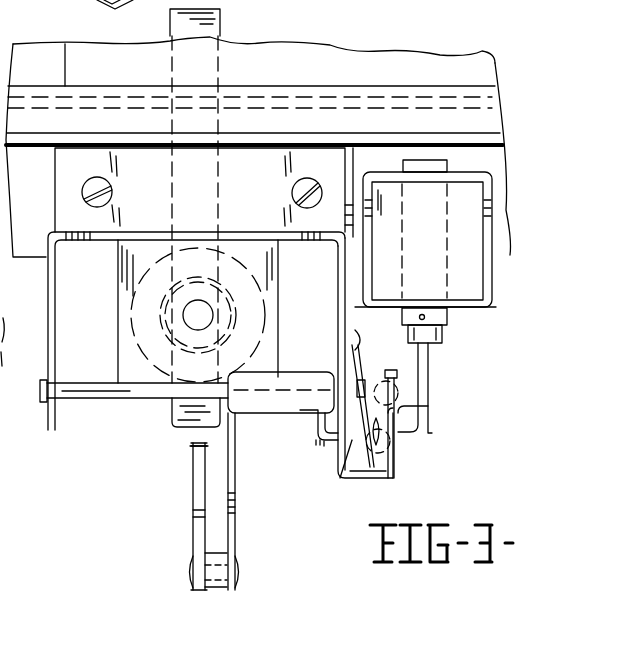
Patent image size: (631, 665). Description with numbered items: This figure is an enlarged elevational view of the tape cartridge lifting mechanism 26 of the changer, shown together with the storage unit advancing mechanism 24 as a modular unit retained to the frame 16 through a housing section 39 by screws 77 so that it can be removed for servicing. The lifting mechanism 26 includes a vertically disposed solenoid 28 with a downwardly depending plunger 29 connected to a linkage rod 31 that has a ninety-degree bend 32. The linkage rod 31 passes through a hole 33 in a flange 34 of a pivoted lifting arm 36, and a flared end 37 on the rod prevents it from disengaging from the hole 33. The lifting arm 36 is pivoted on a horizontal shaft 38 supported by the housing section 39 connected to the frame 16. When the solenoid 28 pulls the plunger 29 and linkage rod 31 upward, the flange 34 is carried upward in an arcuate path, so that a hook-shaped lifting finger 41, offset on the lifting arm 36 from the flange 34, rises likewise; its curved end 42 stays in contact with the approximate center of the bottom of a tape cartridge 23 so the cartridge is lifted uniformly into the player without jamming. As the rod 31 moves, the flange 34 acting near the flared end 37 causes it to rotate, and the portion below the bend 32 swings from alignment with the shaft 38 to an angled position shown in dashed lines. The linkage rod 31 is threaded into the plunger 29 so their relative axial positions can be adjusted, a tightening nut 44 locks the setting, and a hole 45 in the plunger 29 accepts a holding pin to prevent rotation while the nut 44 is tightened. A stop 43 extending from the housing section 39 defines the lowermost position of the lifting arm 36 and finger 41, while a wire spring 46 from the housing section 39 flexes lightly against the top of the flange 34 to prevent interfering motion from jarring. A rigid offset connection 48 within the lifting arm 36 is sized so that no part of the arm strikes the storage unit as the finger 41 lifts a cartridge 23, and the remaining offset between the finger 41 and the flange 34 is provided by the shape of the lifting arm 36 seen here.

The frame 16 is at (42, 194).
The tape cartridge 23 is at (220, 25).
The storage unit advancing mechanism 24 is at (111, 356).
The tape cartridge lifting mechanism 26 is at (301, 490).
The solenoid 28 is at (438, 226).
The plunger 29 is at (448, 317).
The linkage rod 31 is at (430, 415).
The 90° bend 32 is at (398, 428).
The hole 33 is at (398, 393).
The flange 34 is at (392, 481).
The lifting arm 36 is at (251, 462).
The flared end 37 is at (398, 461).
The horizontal shaft 38 is at (112, 398).
The housing section 39 is at (50, 278).
The lifting finger 41 is at (192, 525).
The curved end 42 is at (193, 442).
The stop 43 is at (313, 437).
The tightening nut 44 is at (438, 343).
The hole 45 is at (423, 314).
The wire spring 46 is at (362, 433).
The rigid offset connection 48 is at (218, 556).
The screws 77 is at (112, 188).